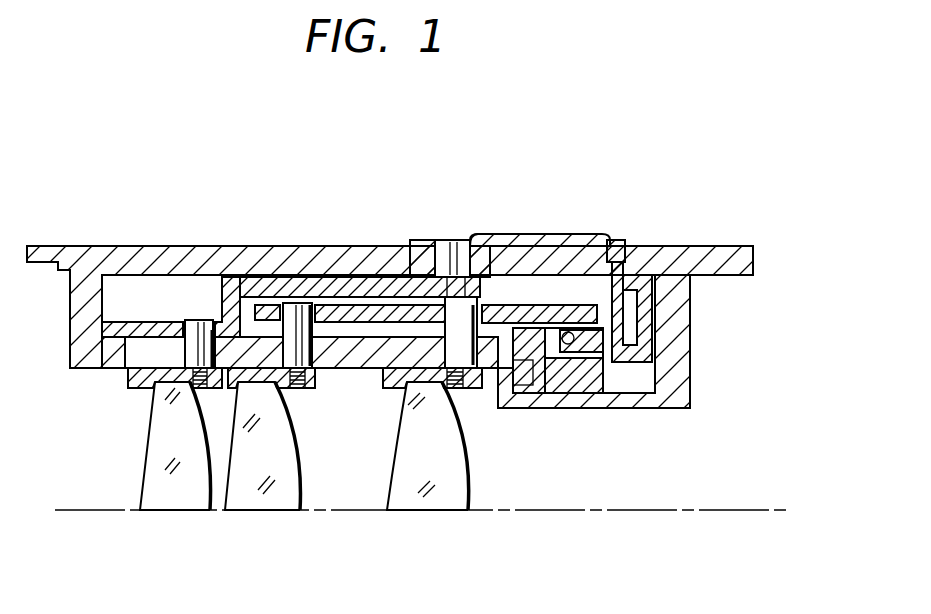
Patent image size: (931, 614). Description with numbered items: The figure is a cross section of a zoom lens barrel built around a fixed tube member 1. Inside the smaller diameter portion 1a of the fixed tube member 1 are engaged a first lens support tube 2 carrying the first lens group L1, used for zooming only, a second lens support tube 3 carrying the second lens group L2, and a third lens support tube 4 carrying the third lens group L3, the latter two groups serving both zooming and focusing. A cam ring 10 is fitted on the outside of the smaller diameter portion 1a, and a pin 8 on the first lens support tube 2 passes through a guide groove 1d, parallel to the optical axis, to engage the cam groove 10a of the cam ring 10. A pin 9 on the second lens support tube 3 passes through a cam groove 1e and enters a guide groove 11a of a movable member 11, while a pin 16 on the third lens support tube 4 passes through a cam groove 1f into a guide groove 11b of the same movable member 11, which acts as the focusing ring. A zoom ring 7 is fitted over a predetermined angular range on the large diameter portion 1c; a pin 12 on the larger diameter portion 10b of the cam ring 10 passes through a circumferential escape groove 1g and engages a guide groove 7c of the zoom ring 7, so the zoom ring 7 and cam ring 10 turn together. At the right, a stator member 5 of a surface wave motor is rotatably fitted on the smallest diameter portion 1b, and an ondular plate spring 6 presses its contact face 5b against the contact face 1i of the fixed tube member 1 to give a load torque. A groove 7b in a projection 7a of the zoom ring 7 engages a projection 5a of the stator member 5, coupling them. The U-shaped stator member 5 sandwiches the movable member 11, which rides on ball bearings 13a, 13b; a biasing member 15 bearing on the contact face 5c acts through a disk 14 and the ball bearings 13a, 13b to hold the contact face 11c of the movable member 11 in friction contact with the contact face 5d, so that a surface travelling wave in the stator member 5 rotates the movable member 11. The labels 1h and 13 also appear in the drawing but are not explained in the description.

The fixed tube member 1 is at (81, 262).
The smaller diameter portion 1a is at (340, 368).
The smallest diameter portion 1b is at (683, 408).
The large diameter portion 1c is at (298, 300).
The guide groove 1d is at (140, 347).
The cam groove 1e is at (297, 388).
The cam groove 1f is at (425, 368).
The circumferential escape groove 1g is at (498, 262).
The body corner portion 1h is at (640, 275).
The contact face 1i is at (655, 368).
The first lens support tube 2 is at (133, 390).
The second lens support tube 3 is at (313, 393).
The third lens support tube 4 is at (390, 390).
The stator member 5 is at (555, 375).
The projection 5a is at (655, 312).
The contact face 5b is at (640, 393).
The contact face 5c is at (492, 370).
The contact face 5d is at (613, 393).
The ondular plate spring 6 is at (517, 380).
The zoom ring 7 is at (548, 258).
The projection 7a is at (604, 260).
The groove 7b is at (667, 250).
The guide groove 7c is at (480, 250).
The pin 8 is at (205, 322).
The pin 9 is at (286, 330).
The cam ring 10 is at (115, 327).
The cam groove 10a is at (180, 330).
The larger diameter portion 10b is at (230, 287).
The movable member 11 is at (518, 310).
The guide groove 11a is at (335, 290).
The guide groove 11b is at (403, 313).
The contact face 11c is at (600, 385).
The pin 12 is at (465, 238).
The adjusting member 13 is at (632, 312).
The ball bearing 13a is at (576, 387).
The ball bearing 13b is at (573, 285).
The disk 14 is at (555, 393).
The biasing member 15 is at (543, 372).
The pin 16 is at (434, 240).
The first lens group L1 is at (189, 498).
The second lens group L2 is at (278, 493).
The third lens group L3 is at (430, 503).